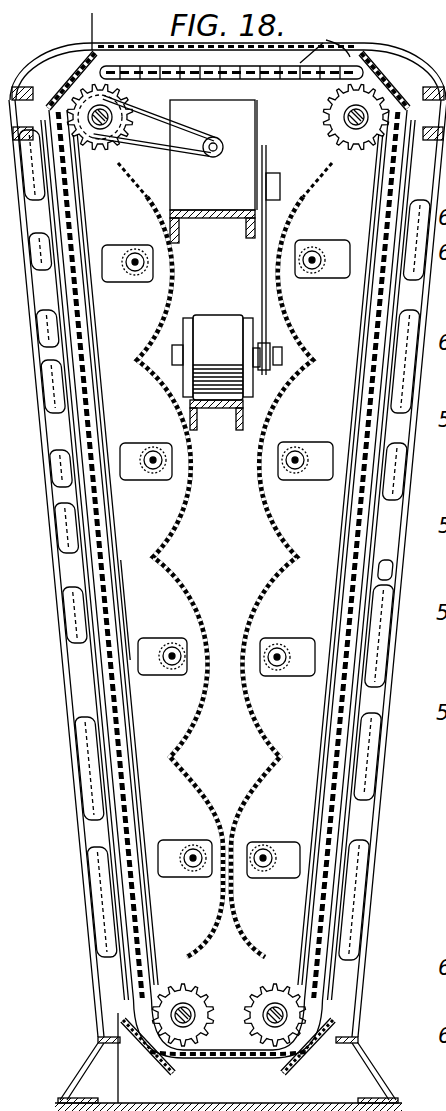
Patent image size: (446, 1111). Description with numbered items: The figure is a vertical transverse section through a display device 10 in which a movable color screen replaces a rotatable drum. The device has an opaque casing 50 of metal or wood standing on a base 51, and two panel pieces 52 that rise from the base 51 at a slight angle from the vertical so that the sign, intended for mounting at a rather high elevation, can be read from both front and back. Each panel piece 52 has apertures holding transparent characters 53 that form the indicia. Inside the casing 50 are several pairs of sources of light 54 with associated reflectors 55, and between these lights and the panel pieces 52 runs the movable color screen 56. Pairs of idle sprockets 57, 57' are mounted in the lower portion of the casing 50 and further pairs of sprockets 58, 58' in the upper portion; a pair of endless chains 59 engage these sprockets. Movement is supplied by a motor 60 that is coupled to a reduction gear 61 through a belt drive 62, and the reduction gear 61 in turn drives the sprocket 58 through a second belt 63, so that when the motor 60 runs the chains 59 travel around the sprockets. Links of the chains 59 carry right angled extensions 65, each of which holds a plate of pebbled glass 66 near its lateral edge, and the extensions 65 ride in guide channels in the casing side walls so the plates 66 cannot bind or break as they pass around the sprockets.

The apparatus 10 is at (85, 31).
The casing 50 is at (361, 42).
The base 51 is at (72, 1082).
The panel pieces 52 is at (72, 577).
The transparent characters 53 is at (50, 460).
The sources of light 54 is at (135, 247).
The reflectors 55 is at (270, 270).
The movable color screen 56 is at (100, 440).
The idle sprocket 57 is at (189, 1000).
The idle sprocket 57' is at (279, 992).
The sprocket 58 is at (99, 143).
The sprocket 58' is at (355, 141).
The endless chains 59 is at (110, 612).
The motor 60 is at (215, 322).
The reduction gear 61 is at (257, 133).
The belt drive 62 is at (262, 252).
The second belt 63 is at (163, 147).
The right angled extension 65 is at (411, 782).
The plate of pebbled glass 66 is at (323, 43).